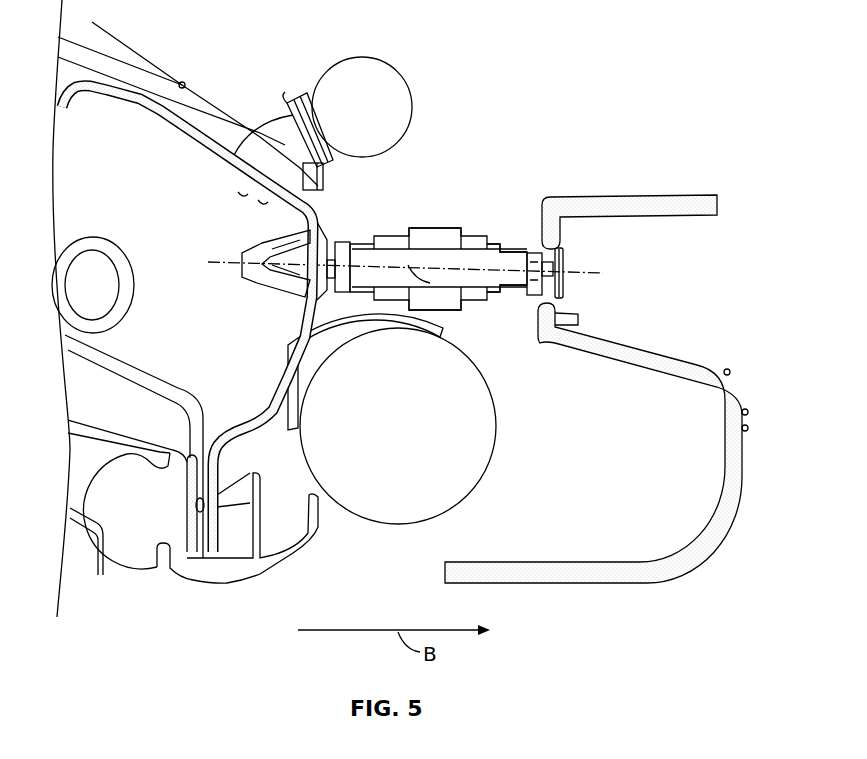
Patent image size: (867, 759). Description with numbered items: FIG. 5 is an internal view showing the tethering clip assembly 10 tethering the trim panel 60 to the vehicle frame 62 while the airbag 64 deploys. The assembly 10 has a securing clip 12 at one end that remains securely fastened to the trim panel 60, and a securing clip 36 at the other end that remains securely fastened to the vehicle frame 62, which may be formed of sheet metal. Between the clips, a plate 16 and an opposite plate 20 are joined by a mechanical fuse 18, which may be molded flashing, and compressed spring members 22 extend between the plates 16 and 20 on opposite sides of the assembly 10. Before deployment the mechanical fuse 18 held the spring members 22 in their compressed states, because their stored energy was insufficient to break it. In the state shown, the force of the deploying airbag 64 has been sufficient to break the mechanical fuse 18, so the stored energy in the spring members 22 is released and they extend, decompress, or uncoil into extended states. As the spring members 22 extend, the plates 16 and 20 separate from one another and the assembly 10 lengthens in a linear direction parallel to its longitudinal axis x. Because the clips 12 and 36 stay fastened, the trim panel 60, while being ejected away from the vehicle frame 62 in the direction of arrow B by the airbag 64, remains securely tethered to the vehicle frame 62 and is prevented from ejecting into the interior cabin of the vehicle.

The tethering clip assembly 10 is at (440, 270).
The securing clip 12 is at (566, 262).
The plate 16 is at (521, 287).
The mechanical fuse 18 is at (513, 262).
The plate 20 is at (357, 240).
The compressed spring members 22 is at (432, 230).
The securing clip 36 is at (265, 247).
The trim panel 60 is at (743, 484).
The vehicle frame 62 is at (152, 90).
The airbag 64 is at (358, 523).